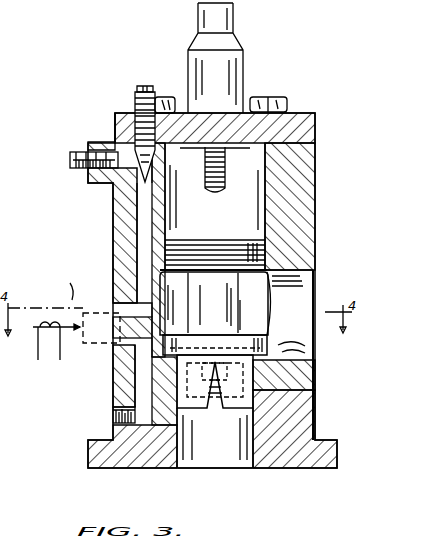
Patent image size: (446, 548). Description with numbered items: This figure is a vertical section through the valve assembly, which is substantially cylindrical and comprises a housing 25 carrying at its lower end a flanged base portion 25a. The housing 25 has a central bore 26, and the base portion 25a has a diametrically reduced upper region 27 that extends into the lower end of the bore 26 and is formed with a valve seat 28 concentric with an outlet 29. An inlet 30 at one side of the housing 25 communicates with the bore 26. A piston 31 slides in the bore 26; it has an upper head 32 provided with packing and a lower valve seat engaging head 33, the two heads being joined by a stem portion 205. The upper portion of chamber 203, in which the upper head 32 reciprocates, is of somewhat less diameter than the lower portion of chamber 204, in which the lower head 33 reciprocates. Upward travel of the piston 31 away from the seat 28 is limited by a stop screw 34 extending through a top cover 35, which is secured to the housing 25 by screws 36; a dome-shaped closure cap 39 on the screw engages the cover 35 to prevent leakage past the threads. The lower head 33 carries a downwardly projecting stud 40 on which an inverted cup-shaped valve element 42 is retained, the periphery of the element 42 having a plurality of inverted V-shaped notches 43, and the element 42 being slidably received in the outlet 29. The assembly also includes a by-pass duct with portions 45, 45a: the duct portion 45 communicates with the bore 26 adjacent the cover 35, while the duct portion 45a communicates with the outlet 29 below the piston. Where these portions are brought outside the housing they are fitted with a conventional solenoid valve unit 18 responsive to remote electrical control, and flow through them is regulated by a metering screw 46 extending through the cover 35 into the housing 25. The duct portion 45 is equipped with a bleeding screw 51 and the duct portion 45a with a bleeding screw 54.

The solenoid valve unit 18 is at (76, 321).
The housing 25 is at (316, 195).
The flanged base portion 25a is at (340, 456).
The central bore 26 is at (258, 218).
The diametrically reduced upper region 27 is at (266, 376).
The valve seat 28 is at (278, 341).
The outlet 29 is at (232, 458).
The inlet 30 is at (303, 299).
The piston 31 is at (173, 286).
The upper head 32 is at (262, 248).
The lower valve seat engaging head 33 is at (170, 342).
The stop screw 34 is at (216, 192).
The top cover 35 is at (316, 129).
The screws 36 is at (284, 97).
The dome-shaped closure cap 39 is at (243, 42).
The stud 40 is at (197, 408).
The inverted cup-shaped valve element 42 is at (177, 420).
The inverted V-shaped notches 43 is at (220, 397).
The by-pass duct portion 45 is at (143, 207).
The by-pass duct portion 45a is at (143, 375).
The metering screw 46 is at (150, 85).
The bleeding screw 51 is at (70, 172).
The bleeding screw 54 is at (113, 418).
The upper portion of chamber 203 is at (250, 170).
The lower portion of chamber 204 is at (266, 289).
The stem portion 205 is at (229, 318).